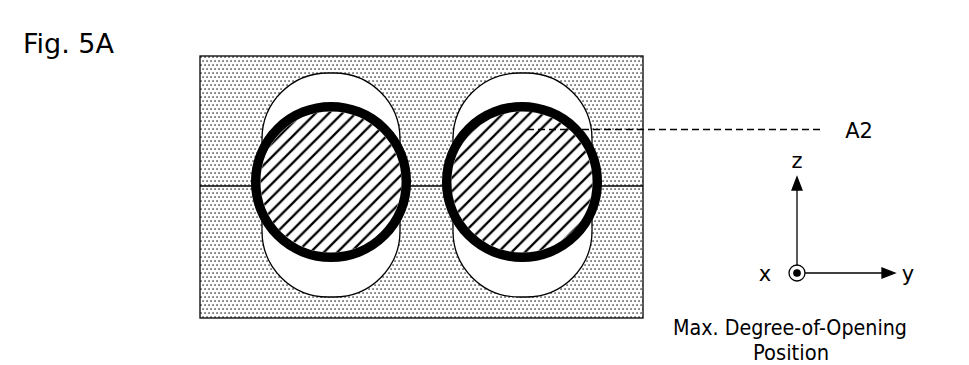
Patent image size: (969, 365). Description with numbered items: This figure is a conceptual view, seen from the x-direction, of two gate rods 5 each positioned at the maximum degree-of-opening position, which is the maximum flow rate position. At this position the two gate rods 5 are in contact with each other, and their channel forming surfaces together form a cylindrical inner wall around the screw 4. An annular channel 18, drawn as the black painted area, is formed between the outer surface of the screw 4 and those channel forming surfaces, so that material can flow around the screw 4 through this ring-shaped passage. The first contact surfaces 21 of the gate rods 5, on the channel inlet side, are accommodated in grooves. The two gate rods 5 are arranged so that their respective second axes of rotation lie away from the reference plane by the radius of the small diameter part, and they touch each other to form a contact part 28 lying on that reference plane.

The screw 4 is at (333, 203).
The gate rod 5 is at (643, 110).
The annular channel 18 is at (253, 160).
The first contact surface 21 is at (327, 78).
The contact part 28 is at (222, 187).